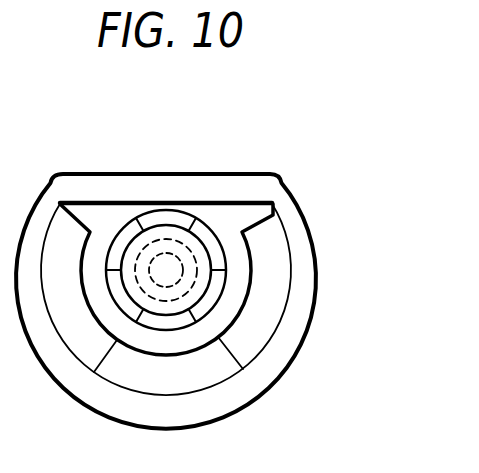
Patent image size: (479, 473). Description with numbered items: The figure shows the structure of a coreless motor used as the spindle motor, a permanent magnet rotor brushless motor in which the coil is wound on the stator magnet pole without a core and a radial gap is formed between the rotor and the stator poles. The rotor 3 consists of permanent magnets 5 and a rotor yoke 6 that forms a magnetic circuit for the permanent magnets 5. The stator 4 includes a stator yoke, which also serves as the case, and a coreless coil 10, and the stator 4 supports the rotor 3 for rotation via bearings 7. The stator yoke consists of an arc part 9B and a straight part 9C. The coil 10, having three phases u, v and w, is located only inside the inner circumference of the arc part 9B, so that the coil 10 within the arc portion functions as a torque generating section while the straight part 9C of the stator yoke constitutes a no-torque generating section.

The rotor 3 is at (298, 78).
The stator 4 is at (423, 247).
The permanent magnets 5 is at (177, 212).
The rotor yoke 6 is at (200, 238).
The bearings 7 is at (124, 242).
The stator yoke arc part 9B is at (302, 306).
The straight part 9C is at (135, 188).
The coreless coil 10 is at (272, 245).